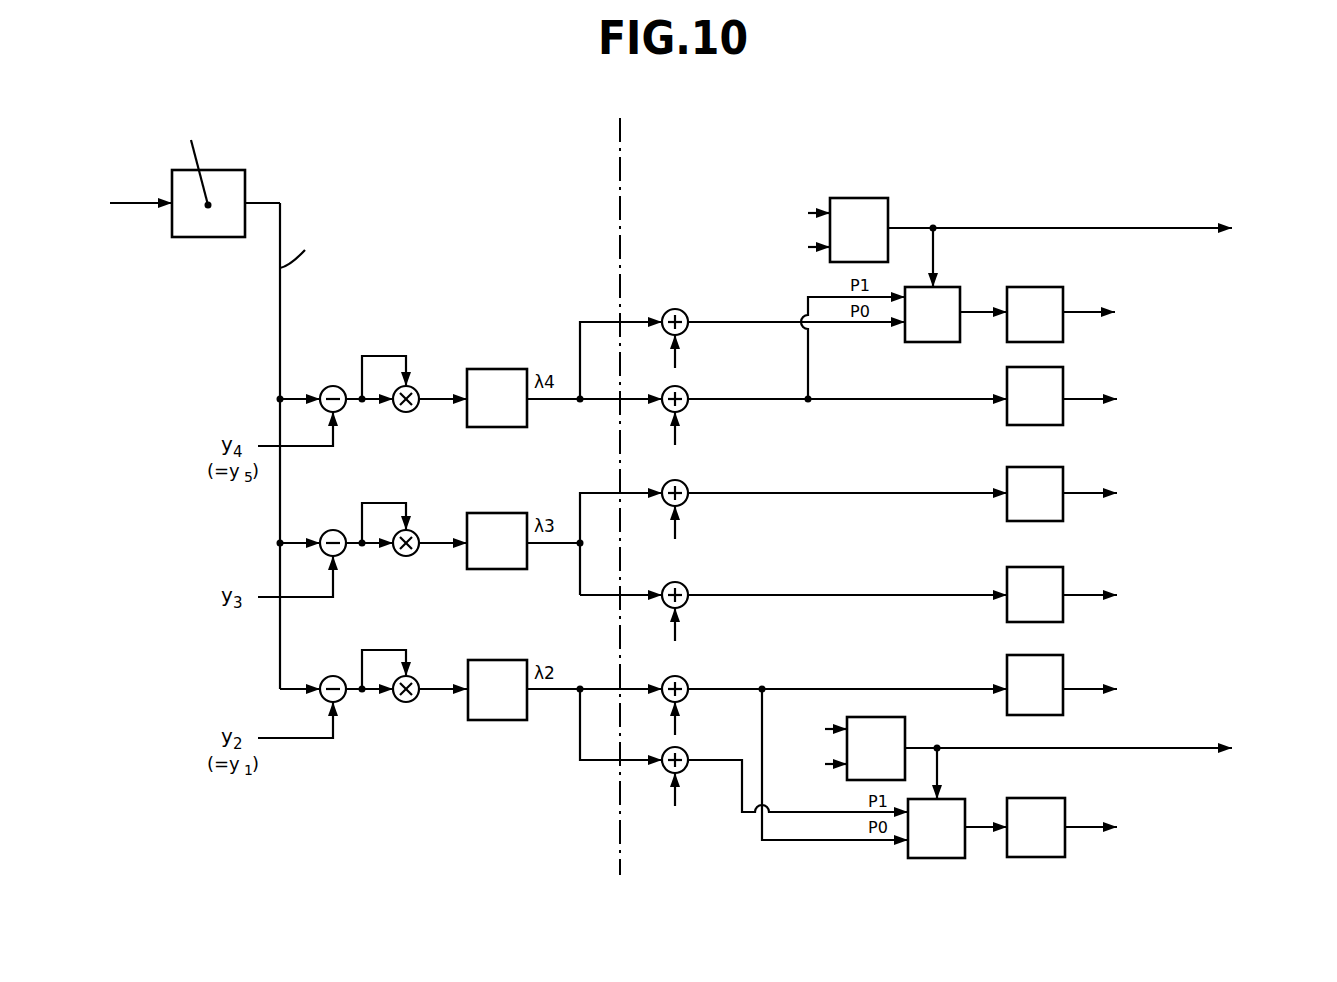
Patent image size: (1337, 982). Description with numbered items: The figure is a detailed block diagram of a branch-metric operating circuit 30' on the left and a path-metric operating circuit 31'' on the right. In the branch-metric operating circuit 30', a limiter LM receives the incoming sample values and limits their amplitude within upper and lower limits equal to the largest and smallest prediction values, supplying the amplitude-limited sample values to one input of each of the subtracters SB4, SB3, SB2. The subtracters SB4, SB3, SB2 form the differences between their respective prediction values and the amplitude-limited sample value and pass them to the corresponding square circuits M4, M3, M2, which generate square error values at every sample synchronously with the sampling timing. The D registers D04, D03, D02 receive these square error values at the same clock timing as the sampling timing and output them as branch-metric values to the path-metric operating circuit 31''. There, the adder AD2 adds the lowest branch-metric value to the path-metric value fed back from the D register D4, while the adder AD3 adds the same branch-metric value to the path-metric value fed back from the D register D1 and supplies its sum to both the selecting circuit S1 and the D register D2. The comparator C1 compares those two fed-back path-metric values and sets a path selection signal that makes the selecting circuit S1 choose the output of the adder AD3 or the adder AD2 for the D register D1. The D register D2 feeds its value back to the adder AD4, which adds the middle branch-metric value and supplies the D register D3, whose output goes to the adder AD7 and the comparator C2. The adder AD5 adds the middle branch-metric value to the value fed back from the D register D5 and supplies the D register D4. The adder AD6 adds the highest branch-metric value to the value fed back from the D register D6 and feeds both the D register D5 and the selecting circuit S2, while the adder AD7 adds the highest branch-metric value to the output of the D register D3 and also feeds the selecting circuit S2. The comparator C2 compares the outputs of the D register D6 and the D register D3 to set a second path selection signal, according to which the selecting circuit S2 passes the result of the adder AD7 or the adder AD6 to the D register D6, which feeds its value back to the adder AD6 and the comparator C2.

The branch-metric operating circuit 30' is at (309, 386).
The path-metric operating circuit 31'' is at (901, 124).
The limiter LM is at (245, 190).
The subtracter SB4 is at (342, 409).
The subtracter SB3 is at (342, 553).
The subtracter SB2 is at (342, 699).
The square circuit M4 is at (414, 389).
The square circuit M3 is at (414, 533).
The square circuit M2 is at (414, 679).
The D register D04 is at (497, 398).
The D register D03 is at (497, 541).
The D register D02 is at (497, 690).
The adder AD7 is at (684, 312).
The adder AD6 is at (684, 389).
The adder AD5 is at (684, 483).
The adder AD4 is at (684, 585).
The adder AD3 is at (684, 679).
The adder AD2 is at (684, 750).
The comparator C2 is at (1029, 242).
The comparator C1 is at (1041, 758).
The selecting circuit S2 is at (956, 314).
The selecting circuit S1 is at (957, 828).
The D register D6 is at (1086, 314).
The D register D5 is at (1087, 396).
The D register D4 is at (1087, 494).
The D register D3 is at (1087, 594).
The D register D2 is at (1087, 685).
The D register D1 is at (1056, 783).